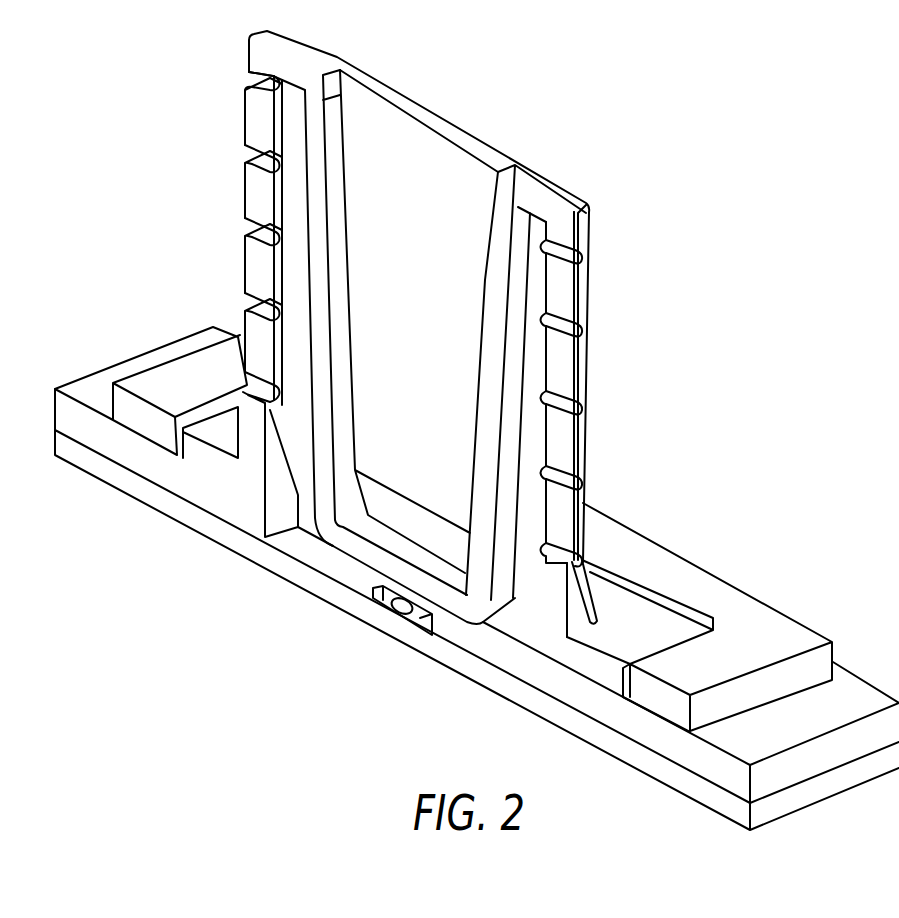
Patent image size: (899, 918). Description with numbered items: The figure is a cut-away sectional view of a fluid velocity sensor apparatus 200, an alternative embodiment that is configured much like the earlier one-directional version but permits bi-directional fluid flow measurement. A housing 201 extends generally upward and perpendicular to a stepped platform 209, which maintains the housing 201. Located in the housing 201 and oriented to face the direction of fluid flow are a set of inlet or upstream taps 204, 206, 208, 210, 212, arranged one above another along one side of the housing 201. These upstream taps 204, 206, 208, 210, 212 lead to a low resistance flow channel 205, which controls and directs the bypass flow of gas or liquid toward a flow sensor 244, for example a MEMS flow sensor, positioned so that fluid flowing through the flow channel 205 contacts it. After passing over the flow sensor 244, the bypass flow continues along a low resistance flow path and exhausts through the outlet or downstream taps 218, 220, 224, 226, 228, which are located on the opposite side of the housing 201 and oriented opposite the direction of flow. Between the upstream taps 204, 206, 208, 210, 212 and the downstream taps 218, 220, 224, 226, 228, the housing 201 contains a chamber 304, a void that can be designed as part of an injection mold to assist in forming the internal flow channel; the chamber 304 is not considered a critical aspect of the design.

The fluid velocity sensor apparatus 200 is at (783, 117).
The housing 201 is at (555, 185).
The upstream tap 204 is at (581, 252).
The flow channel 205 is at (517, 632).
The upstream tap 206 is at (581, 329).
The upstream tap 208 is at (581, 407).
The stepped platform 209 is at (816, 612).
The upstream tap 210 is at (582, 482).
The upstream tap 212 is at (584, 560).
The downstream tap 218 is at (241, 78).
The downstream tap 220 is at (241, 153).
The downstream tap 224 is at (241, 228).
The downstream tap 226 is at (241, 306).
The downstream tap 228 is at (240, 386).
The flow sensor 244 is at (378, 596).
The chamber 304 is at (412, 148).